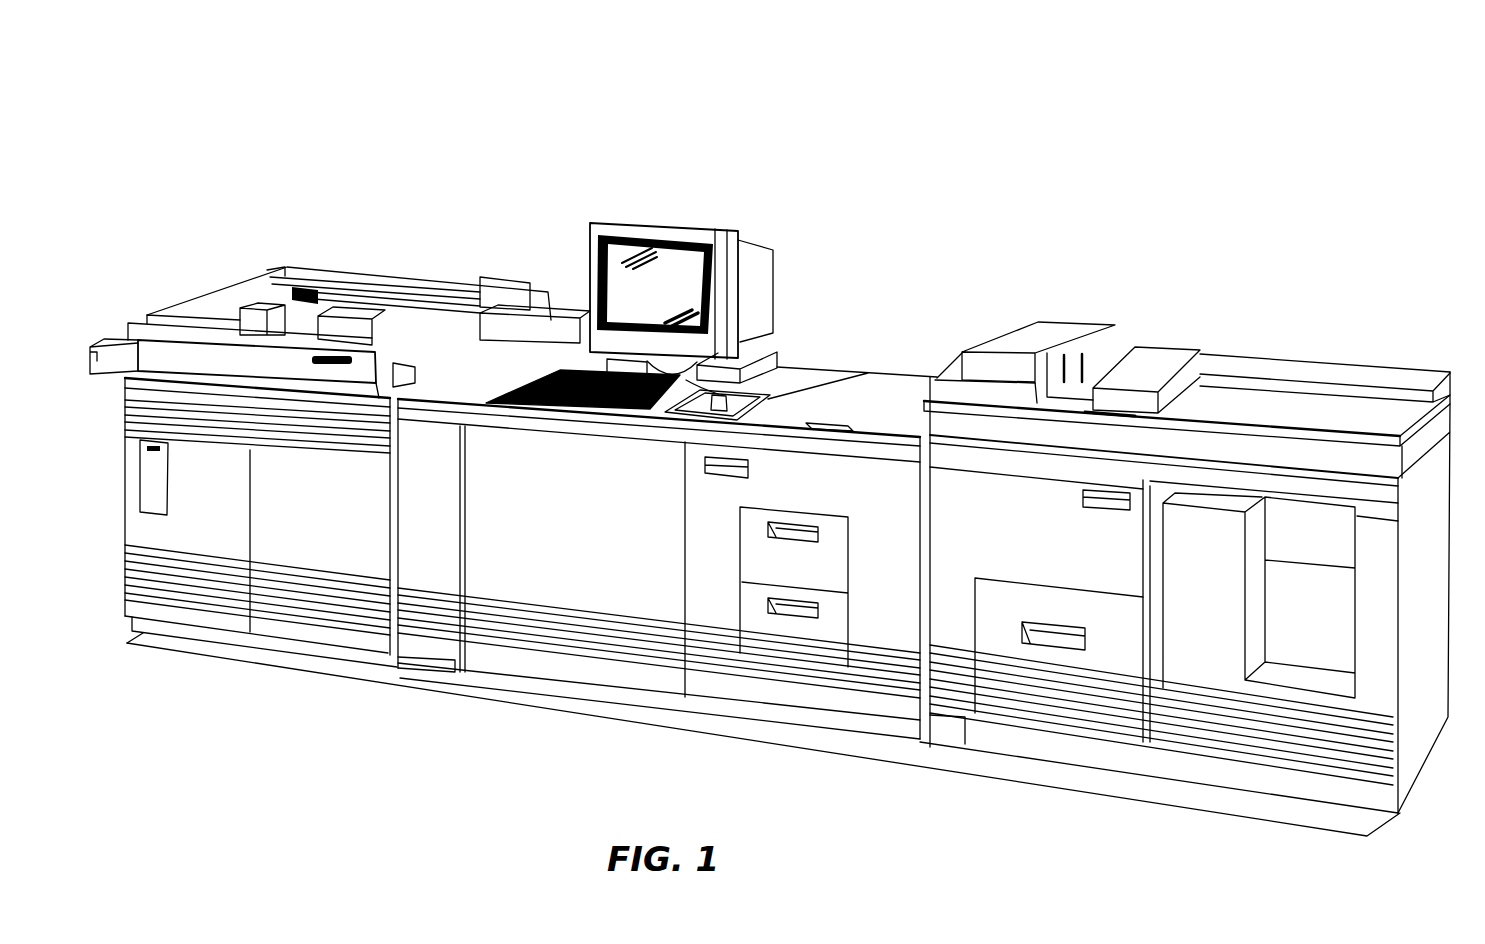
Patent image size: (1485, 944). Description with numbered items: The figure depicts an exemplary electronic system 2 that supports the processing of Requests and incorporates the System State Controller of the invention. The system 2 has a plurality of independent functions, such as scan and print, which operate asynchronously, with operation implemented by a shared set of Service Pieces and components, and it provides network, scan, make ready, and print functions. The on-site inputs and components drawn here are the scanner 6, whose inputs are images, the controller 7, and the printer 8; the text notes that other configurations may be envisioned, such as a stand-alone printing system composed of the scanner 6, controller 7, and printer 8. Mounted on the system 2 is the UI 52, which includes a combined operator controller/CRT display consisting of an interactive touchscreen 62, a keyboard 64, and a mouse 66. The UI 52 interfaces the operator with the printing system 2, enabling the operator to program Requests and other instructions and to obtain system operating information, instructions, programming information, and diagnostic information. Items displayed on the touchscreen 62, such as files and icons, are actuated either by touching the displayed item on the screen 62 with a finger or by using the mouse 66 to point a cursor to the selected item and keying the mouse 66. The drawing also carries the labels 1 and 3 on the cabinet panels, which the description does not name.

The system 2 is at (917, 99).
The scanner 6 is at (378, 240).
The controller 7 is at (107, 521).
The printer 8 is at (886, 282).
The UI 52 is at (686, 206).
The interactive touchscreen 62 is at (618, 296).
The keyboard 64 is at (573, 418).
The mouse 66 is at (688, 421).
The paper tray 1 is at (794, 587).
The paper tray 3 is at (1059, 645).